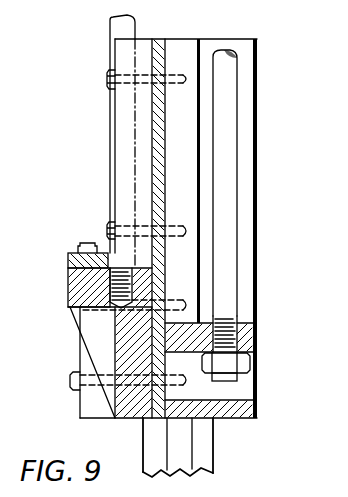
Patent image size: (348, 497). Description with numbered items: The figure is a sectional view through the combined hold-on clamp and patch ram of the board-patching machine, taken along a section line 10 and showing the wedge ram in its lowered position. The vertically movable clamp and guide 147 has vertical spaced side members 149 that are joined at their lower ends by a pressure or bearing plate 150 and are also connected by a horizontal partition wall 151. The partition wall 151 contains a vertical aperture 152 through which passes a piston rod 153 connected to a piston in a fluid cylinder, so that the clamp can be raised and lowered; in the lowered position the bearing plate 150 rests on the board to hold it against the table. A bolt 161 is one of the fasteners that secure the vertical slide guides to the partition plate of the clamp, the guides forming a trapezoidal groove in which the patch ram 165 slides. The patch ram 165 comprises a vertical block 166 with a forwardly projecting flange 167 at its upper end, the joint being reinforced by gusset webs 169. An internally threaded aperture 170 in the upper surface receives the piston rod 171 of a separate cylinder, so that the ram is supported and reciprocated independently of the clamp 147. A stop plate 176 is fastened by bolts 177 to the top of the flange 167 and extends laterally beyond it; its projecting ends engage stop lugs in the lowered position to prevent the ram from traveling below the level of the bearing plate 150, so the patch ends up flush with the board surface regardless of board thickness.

The section line 10 is at (60, 283).
The clamp and guide 147 is at (253, 205).
The side members 149 is at (242, 235).
The bearing plate 150 is at (233, 412).
The partition wall 151 is at (225, 342).
The vertical aperture 152 is at (238, 344).
The piston rod 153 is at (228, 175).
The bolt 161 is at (107, 78).
The patch ram 165 is at (82, 346).
The vertical block 166 is at (132, 410).
The flange 167 is at (73, 275).
The gusset webs 169 is at (88, 323).
The internally threaded aperture 170 is at (132, 277).
The piston rod 171 is at (128, 133).
The stop plate 176 is at (70, 254).
The bolts 177 is at (88, 244).